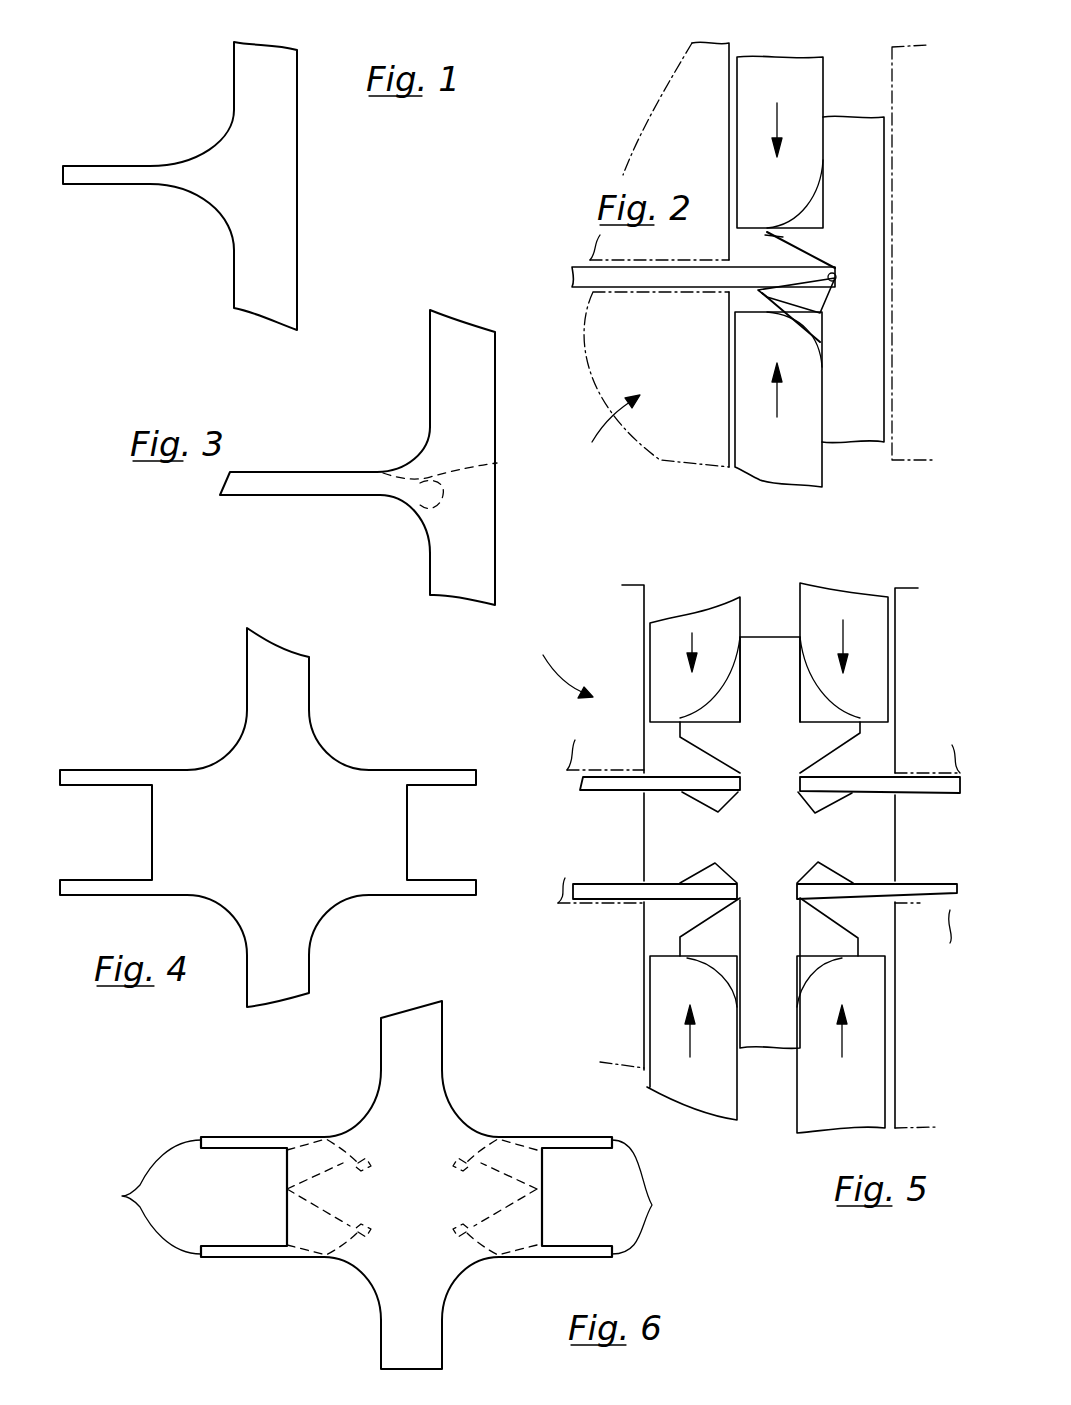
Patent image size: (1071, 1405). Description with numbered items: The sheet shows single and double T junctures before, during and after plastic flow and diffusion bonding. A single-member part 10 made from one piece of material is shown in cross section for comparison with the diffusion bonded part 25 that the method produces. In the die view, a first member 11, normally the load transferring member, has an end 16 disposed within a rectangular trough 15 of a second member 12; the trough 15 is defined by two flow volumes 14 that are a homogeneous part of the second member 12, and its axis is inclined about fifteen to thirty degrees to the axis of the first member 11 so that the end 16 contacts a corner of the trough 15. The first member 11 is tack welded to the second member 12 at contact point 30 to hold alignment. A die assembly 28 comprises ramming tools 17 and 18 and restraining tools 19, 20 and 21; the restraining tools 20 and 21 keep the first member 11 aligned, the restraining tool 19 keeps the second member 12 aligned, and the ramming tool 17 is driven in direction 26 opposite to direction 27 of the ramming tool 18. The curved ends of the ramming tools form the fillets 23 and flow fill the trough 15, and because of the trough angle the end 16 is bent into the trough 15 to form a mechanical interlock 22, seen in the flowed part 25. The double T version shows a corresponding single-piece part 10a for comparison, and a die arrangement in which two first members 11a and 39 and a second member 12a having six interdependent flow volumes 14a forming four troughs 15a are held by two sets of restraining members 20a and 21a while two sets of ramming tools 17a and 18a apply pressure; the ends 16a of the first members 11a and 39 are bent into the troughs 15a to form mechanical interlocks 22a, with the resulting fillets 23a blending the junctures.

In FIG. 1, the single member part 10 is at (304, 196).
In FIG. 4, the single piece part 10a is at (320, 765).
In FIG. 3, the first member 11 is at (285, 478).
In FIG. 2, the first member 11 is at (572, 278).
In FIG. 6, the first member 11a is at (122, 1196).
In FIG. 5, the first member 11a is at (600, 785).
In FIG. 3, the second member 12 is at (477, 535).
In FIG. 2, the second member 12 is at (860, 420).
In FIG. 6, the second member 12a is at (417, 1010).
In FIG. 5, the second member 12a is at (767, 1037).
In FIG. 2, the flow volumes 14 is at (767, 237).
In FIG. 5, the flow volumes 14a is at (710, 740).
In FIG. 2, the trough 15 is at (787, 256).
In FIG. 5, the troughs 15a is at (815, 873).
In FIG. 2, the end 16 is at (836, 282).
In FIG. 5, the ends 16a is at (797, 783).
In FIG. 2, the ramming tool 17 is at (797, 460).
In FIG. 5, the ramming tools 17a is at (703, 1093).
In FIG. 2, the ramming tool 18 is at (818, 70).
In FIG. 5, the ramming tools 18a is at (713, 612).
In FIG. 2, the restraining tool 19 is at (913, 437).
In FIG. 2, the restraining tool 20 is at (660, 418).
In FIG. 5, the restraining members 20a is at (622, 1037).
In FIG. 2, the restraining tool 21 is at (695, 50).
In FIG. 5, the restraining members 21a is at (620, 627).
In FIG. 3, the mechanical interlock 22 is at (497, 463).
In FIG. 6, the mechanical interlocks 22a is at (287, 1192).
In FIG. 3, the fillets 23 is at (413, 452).
In FIG. 6, the fillet between web and flange 23a is at (365, 1108).
In FIG. 3, the diffusion bonded part 25 is at (397, 513).
In FIG. 2, the direction 26 is at (760, 413).
In FIG. 2, the direction 27 is at (780, 110).
In FIG. 2, the die assembly 28 is at (604, 434).
In FIG. 5, the die assembly 28 is at (550, 665).
In FIG. 2, the contact point 30 is at (757, 290).
In FIG. 6, the first member 39 is at (591, 1197).
In FIG. 5, the first member 39 is at (960, 792).